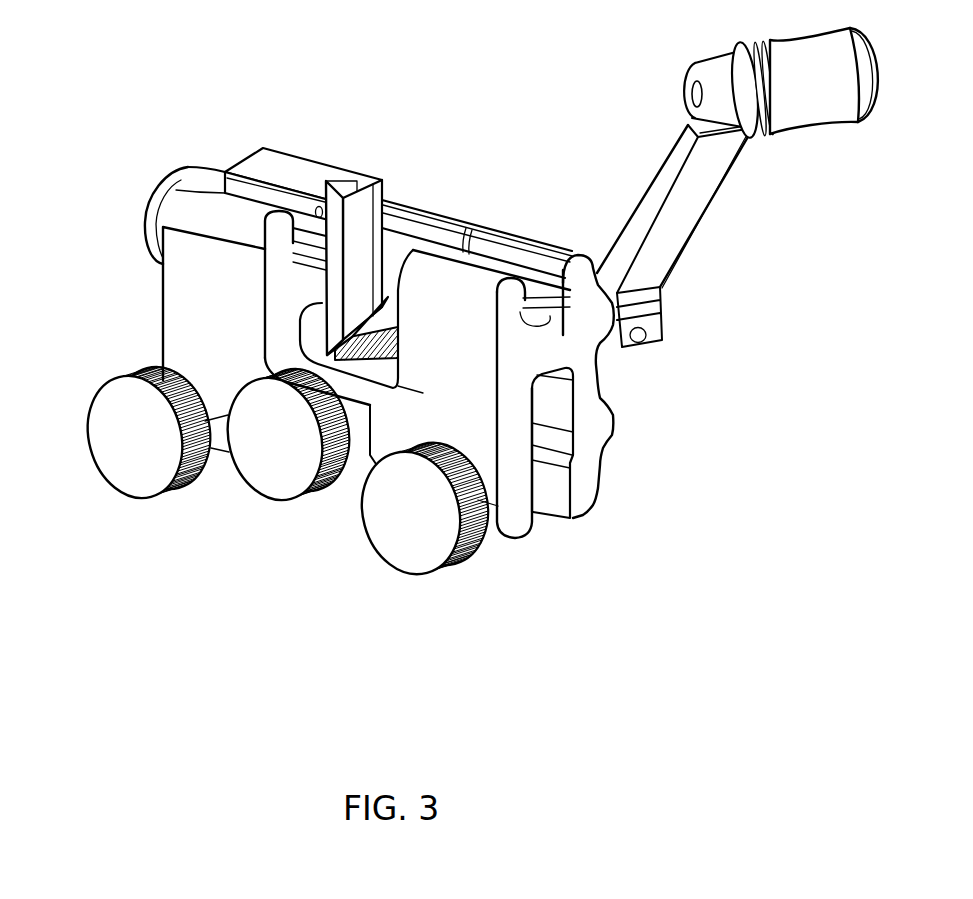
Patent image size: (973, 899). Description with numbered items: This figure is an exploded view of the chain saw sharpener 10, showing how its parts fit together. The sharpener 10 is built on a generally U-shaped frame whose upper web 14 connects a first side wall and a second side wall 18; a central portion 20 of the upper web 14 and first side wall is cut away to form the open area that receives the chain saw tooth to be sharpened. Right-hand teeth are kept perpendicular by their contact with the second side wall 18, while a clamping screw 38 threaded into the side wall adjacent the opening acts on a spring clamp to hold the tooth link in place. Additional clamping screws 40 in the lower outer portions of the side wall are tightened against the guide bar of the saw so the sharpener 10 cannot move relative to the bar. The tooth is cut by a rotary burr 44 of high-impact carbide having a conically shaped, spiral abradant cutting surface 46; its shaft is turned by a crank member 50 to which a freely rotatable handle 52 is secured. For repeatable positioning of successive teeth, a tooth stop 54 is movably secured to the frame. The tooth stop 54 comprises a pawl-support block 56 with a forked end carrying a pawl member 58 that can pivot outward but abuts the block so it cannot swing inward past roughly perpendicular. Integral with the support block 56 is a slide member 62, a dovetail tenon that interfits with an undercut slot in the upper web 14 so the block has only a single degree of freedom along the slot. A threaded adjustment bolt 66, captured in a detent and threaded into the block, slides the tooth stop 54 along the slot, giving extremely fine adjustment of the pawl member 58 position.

The sharpener 10 is at (495, 304).
The upper web 14 is at (108, 243).
The second side wall 18 is at (598, 434).
The central portion 20 is at (287, 294).
The clamping screw 38 is at (262, 445).
The clamping screws 40 is at (126, 449).
The rotary burr 44 is at (774, 232).
The abradant cutting surface 46 is at (386, 353).
The crank member 50 is at (876, 66).
The handle 52 is at (793, 80).
The tooth stop 54 is at (350, 146).
The pawl-support block 56 is at (281, 177).
The pawl member 58 is at (364, 318).
The slide member 62 is at (309, 230).
The threaded adjustment bolt 66 is at (163, 177).